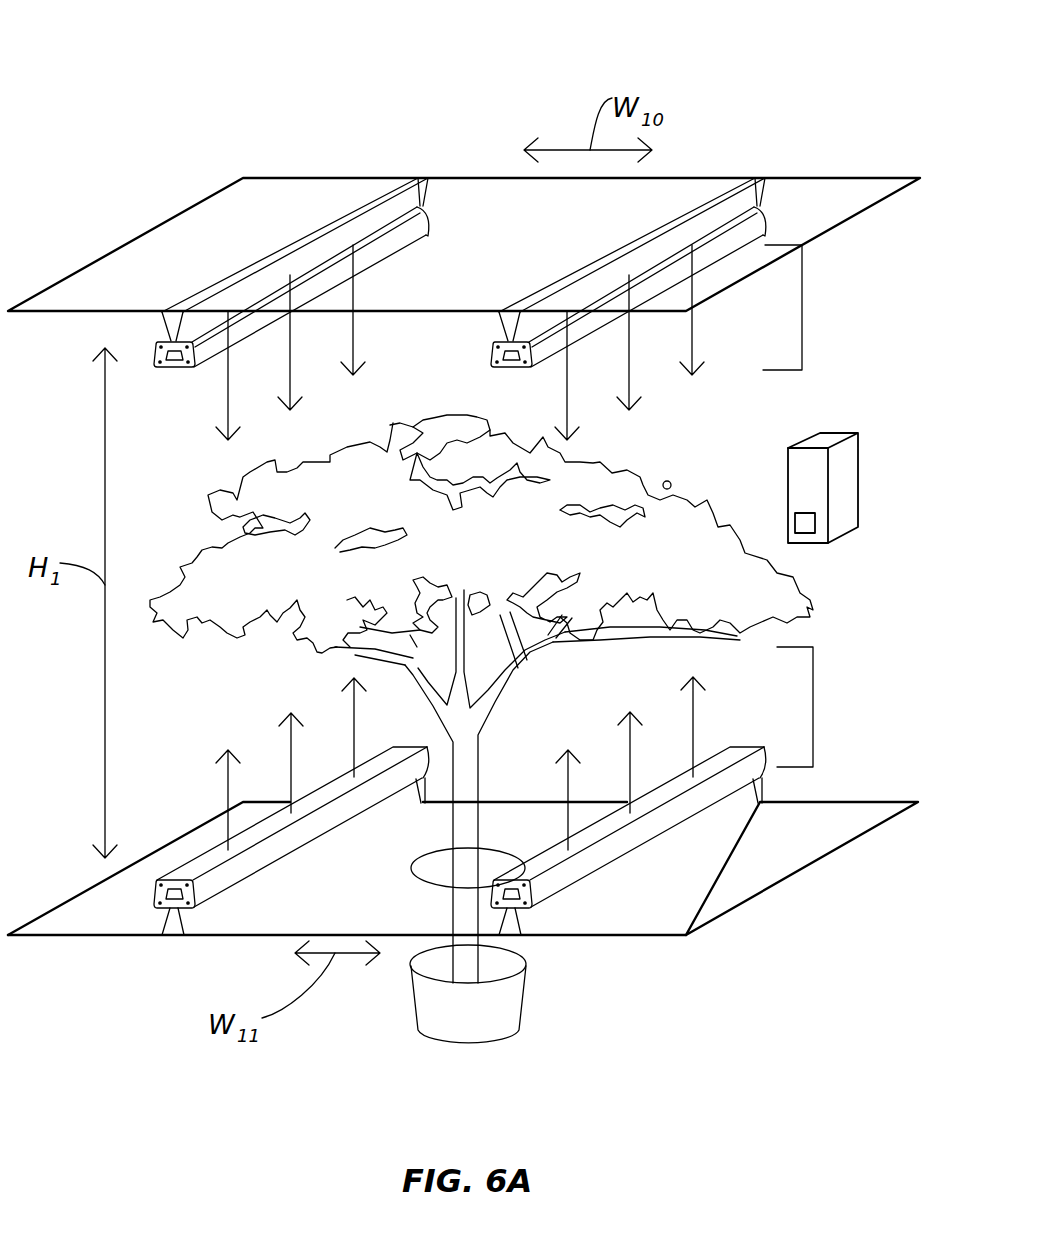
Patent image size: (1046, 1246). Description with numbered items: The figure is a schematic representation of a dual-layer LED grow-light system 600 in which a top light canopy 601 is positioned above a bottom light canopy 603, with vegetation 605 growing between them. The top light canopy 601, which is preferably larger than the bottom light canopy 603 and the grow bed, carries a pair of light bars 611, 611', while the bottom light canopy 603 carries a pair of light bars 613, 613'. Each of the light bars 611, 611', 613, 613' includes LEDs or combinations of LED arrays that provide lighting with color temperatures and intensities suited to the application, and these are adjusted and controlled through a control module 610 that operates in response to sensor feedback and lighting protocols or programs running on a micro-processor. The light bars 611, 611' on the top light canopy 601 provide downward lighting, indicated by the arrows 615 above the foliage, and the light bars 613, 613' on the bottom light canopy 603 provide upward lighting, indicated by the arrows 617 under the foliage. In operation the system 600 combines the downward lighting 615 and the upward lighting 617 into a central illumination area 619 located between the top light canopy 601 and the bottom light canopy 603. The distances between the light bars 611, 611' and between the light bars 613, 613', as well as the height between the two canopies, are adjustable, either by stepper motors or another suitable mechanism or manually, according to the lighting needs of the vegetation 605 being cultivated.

The dual-layer LED grow-light system 600 is at (193, 104).
The top light canopy 601 is at (126, 244).
The bottom light canopy 603 is at (752, 897).
The vegetation 605 is at (643, 476).
The control module 610 is at (838, 432).
The light bar 611 is at (323, 240).
The light bar 611' is at (663, 240).
The light bar 613 is at (234, 882).
The light bar 613' is at (628, 882).
The arrows indicating downward lighting 615 is at (805, 307).
The arrows indicating upward lighting 617 is at (814, 706).
The central illumination area 619 is at (258, 688).